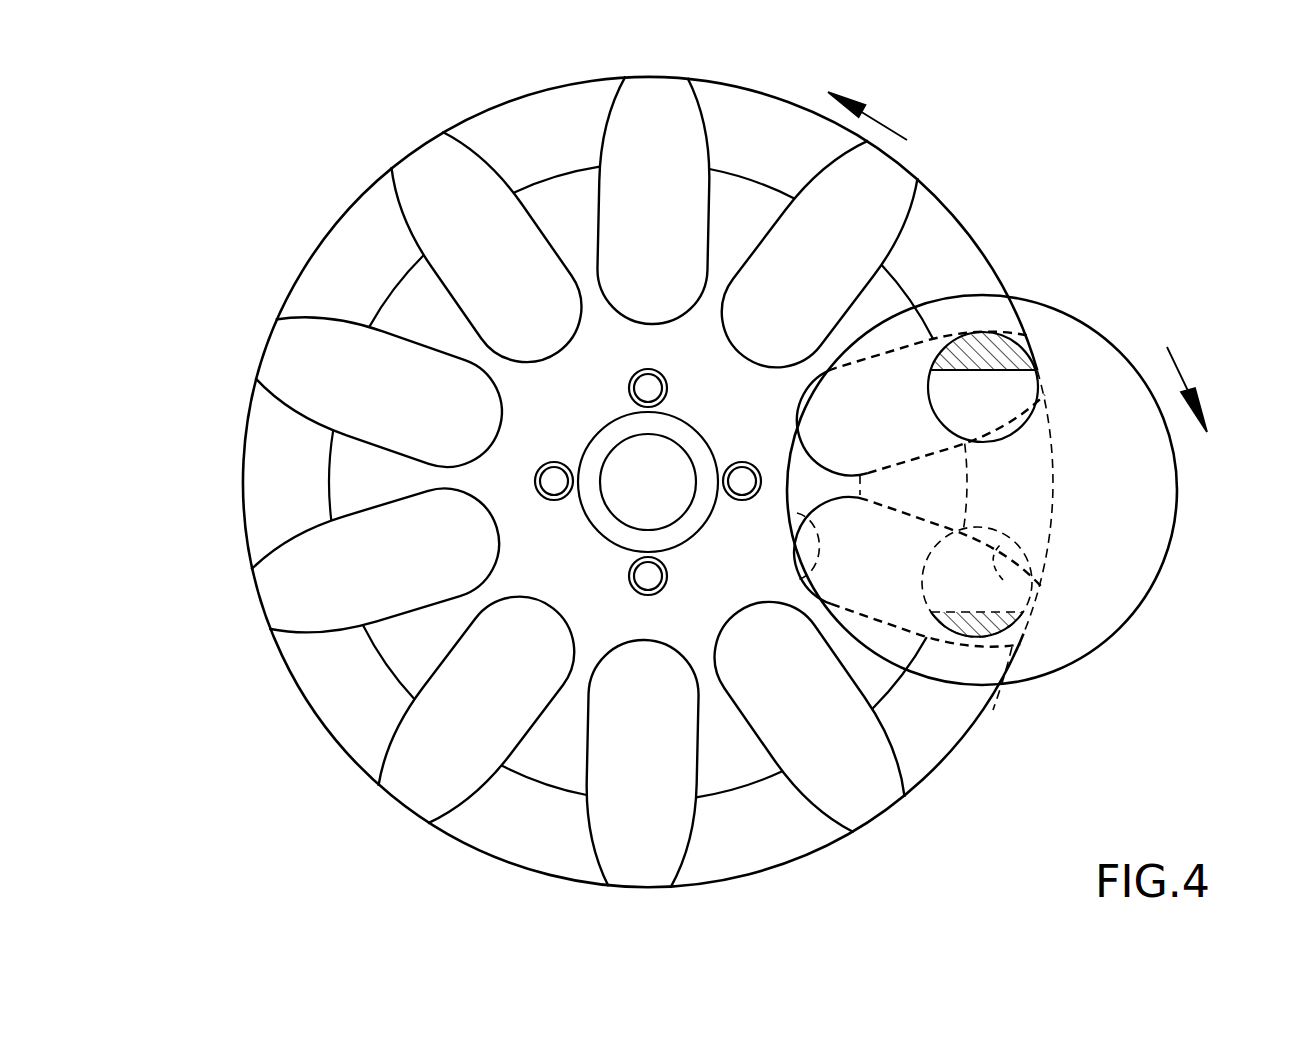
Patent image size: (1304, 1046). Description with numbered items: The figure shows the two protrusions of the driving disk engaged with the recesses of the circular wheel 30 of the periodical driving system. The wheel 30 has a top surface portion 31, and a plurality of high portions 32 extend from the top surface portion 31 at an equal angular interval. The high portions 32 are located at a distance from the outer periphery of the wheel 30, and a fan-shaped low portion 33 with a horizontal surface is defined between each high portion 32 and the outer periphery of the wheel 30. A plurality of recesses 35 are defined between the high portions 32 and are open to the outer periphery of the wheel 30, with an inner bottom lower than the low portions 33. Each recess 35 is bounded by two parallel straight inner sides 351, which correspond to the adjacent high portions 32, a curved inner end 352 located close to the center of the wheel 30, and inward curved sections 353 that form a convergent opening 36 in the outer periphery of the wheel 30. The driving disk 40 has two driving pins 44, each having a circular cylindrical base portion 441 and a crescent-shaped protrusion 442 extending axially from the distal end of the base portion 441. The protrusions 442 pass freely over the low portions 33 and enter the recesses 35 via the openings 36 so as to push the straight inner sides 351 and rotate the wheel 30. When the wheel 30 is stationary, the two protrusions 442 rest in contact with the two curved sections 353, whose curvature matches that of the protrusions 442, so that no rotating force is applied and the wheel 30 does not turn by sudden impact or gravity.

The circular wheel 30 is at (503, 89).
The top surface portion 31 is at (530, 433).
The high portion 32 is at (860, 320).
The low portion 33 is at (947, 278).
The recess 35 is at (880, 590).
The straight inner side 351 is at (900, 637).
The curved inner end 352 is at (805, 573).
The curved section 353 is at (1017, 578).
The convergent opening 36 is at (1037, 383).
The driving disk 40 is at (1138, 618).
The driving pin 44 is at (1003, 537).
The circular cylindrical base portion 441 is at (1007, 552).
The protrusion 442 is at (990, 627).